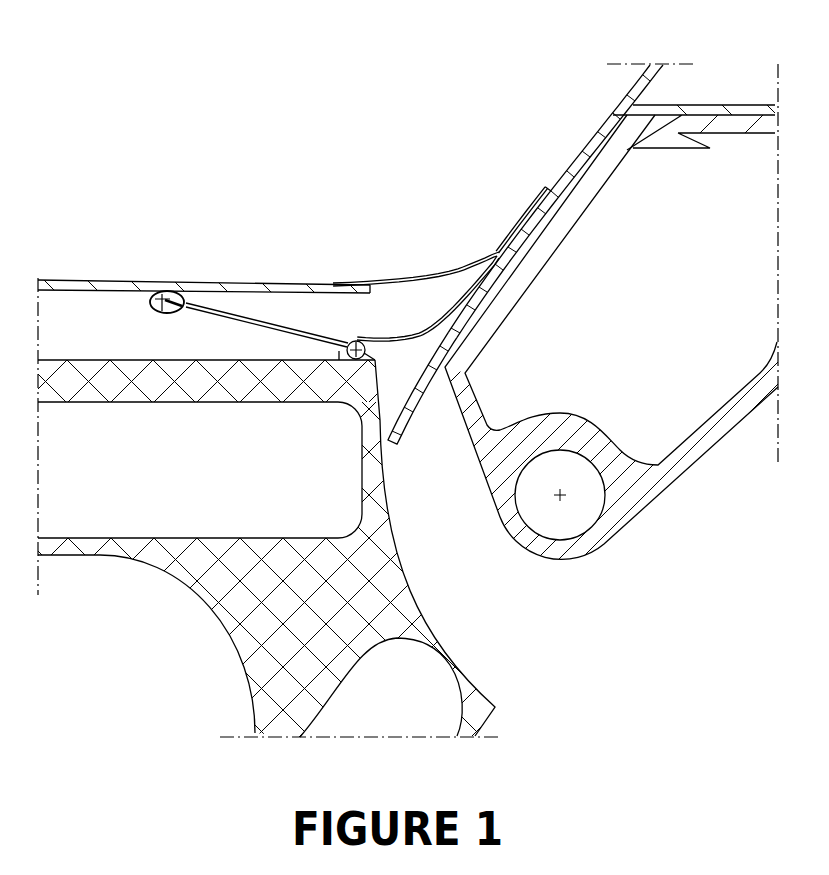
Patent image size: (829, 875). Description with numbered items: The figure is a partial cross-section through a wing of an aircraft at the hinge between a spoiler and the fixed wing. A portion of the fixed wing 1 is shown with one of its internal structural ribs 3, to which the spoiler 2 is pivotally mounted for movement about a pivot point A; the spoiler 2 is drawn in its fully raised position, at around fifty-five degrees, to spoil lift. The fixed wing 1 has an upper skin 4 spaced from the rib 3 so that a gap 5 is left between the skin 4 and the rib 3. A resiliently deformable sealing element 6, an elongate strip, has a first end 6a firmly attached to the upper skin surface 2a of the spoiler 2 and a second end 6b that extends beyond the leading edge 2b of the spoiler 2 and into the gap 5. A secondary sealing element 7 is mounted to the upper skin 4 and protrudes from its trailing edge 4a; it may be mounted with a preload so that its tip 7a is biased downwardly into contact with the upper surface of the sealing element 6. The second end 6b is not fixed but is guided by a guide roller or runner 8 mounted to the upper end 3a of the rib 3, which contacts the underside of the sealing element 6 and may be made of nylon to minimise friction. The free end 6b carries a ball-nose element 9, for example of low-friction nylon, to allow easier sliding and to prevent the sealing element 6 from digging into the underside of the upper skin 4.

The fixed wing 1 is at (171, 88).
The spoiler 2 is at (655, 307).
The upper skin surface 2a is at (597, 127).
The leading edge 2b is at (417, 436).
The internal structural rib 3 is at (112, 403).
The upper end of the rib 3a is at (157, 359).
The upper skin 4 is at (94, 281).
The trailing edge 4a is at (370, 294).
The gap 5 is at (73, 334).
The sealing element 6 is at (405, 336).
The first end of the sealing element 6a is at (516, 195).
The second end of the sealing element 6b is at (260, 300).
The secondary sealing element 7 is at (438, 274).
The tip of the secondary sealing element 7a is at (486, 263).
The guide roller or runner 8 is at (345, 347).
The ball-nose element 9 is at (150, 301).
The pivot point A is at (568, 513).